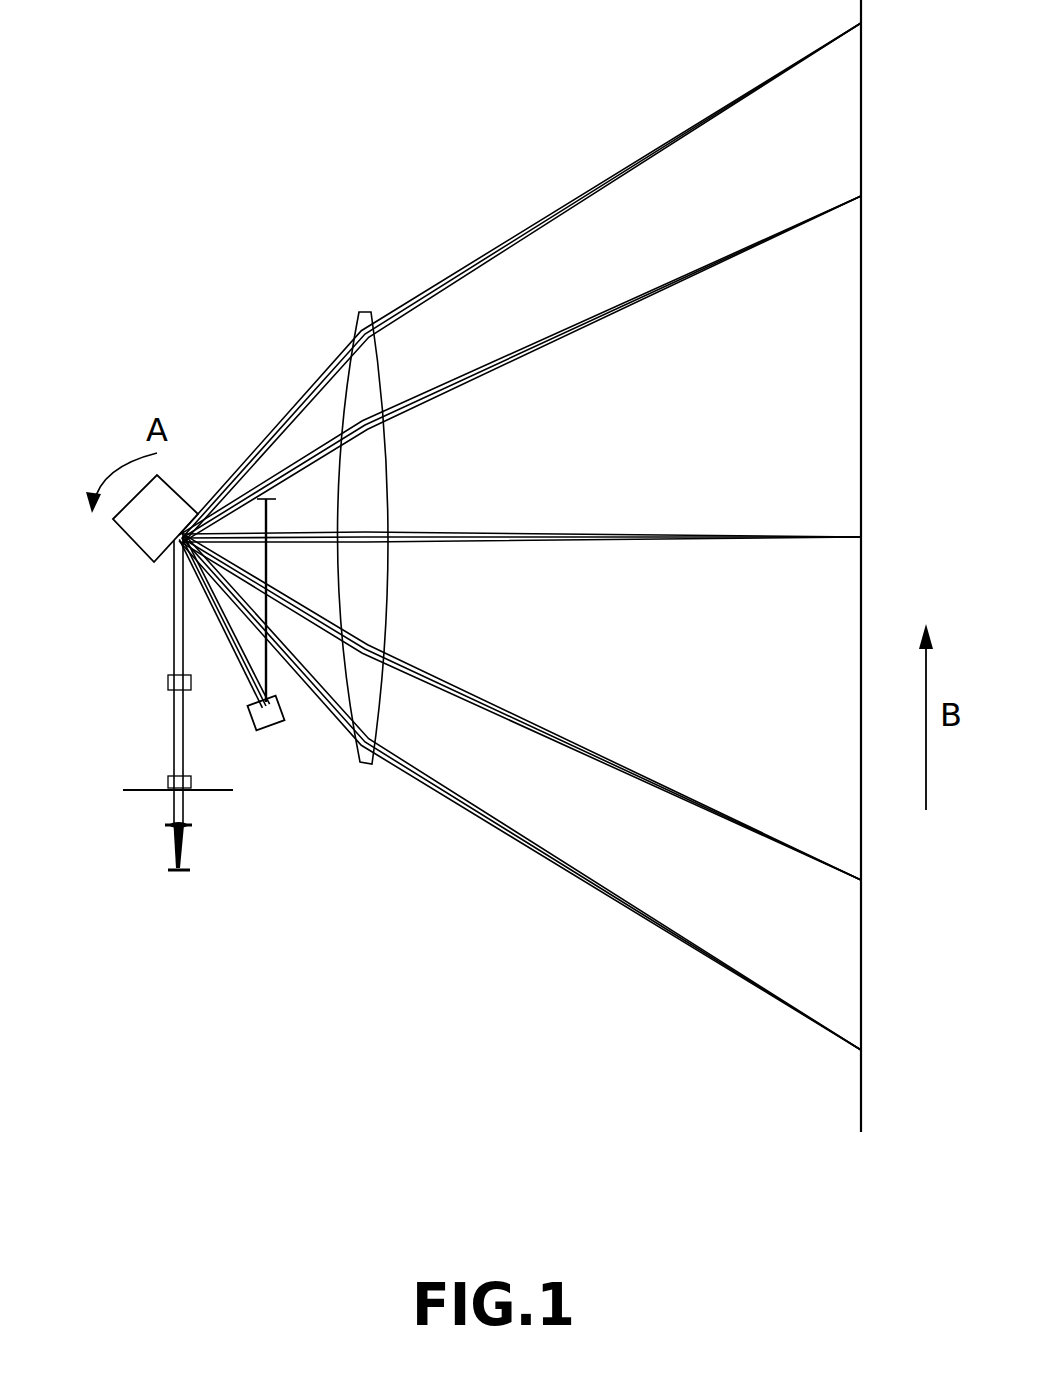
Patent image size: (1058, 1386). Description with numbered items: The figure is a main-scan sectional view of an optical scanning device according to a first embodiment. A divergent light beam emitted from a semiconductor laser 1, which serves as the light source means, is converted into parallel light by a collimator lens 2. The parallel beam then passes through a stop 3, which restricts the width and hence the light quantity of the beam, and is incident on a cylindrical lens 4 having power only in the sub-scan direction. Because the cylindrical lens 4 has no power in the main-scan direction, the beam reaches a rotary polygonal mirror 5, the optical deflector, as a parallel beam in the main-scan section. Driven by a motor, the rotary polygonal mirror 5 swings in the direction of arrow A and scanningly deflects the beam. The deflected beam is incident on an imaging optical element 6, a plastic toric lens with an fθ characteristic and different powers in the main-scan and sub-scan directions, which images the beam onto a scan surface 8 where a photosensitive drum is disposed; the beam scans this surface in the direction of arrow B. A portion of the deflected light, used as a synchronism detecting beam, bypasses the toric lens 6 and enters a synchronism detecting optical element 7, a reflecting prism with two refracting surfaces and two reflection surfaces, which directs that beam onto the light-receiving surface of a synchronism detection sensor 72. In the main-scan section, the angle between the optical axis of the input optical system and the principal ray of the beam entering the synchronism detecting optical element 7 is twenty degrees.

The semiconductor laser 1 is at (177, 867).
The collimator lens 2 is at (132, 789).
The stop 3 is at (190, 832).
The cylindrical lens 4 is at (168, 683).
The rotary polygonal mirror 5 is at (104, 478).
The imaging optical element 6 is at (365, 764).
The synchronism detecting optical element 7 is at (273, 732).
The synchronism detection sensor 72 is at (277, 499).
The scan surface 8 is at (862, 1112).